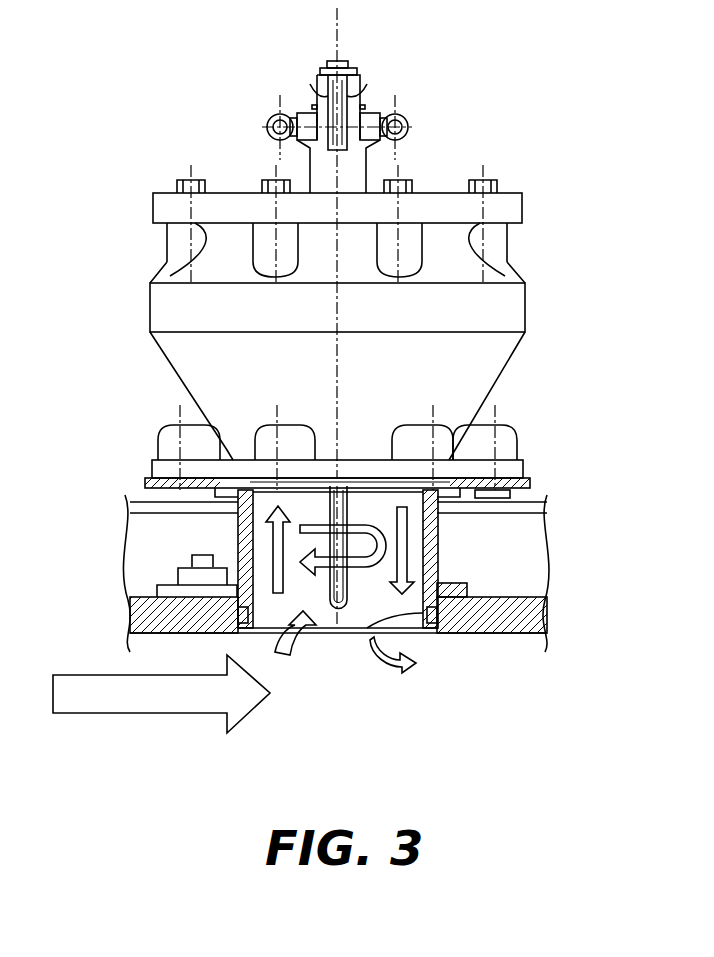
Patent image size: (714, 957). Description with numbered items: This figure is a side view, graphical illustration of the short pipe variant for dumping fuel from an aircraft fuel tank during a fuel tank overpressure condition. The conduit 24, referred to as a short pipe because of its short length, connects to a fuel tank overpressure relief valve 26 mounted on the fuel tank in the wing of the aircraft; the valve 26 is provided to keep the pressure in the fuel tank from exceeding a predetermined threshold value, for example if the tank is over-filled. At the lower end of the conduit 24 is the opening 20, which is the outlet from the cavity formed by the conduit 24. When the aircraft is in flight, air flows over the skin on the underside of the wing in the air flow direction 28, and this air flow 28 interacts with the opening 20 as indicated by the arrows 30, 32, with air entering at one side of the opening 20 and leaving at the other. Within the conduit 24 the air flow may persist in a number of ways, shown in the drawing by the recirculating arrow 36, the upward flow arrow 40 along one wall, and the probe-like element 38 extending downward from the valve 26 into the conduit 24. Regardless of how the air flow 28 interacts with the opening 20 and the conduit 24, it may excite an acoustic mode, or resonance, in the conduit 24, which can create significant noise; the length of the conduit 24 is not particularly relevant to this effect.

The opening 20 is at (370, 618).
The conduit 24 is at (437, 536).
The fuel tank overpressure relief valve 26 is at (487, 297).
The air flow direction 28 is at (95, 675).
The arrow 30 is at (300, 650).
The arrow 32 is at (416, 666).
The recirculating flow arrow 36 is at (406, 558).
The probe / sensing rod 38 is at (358, 520).
The upward flow arrow 40 is at (266, 531).